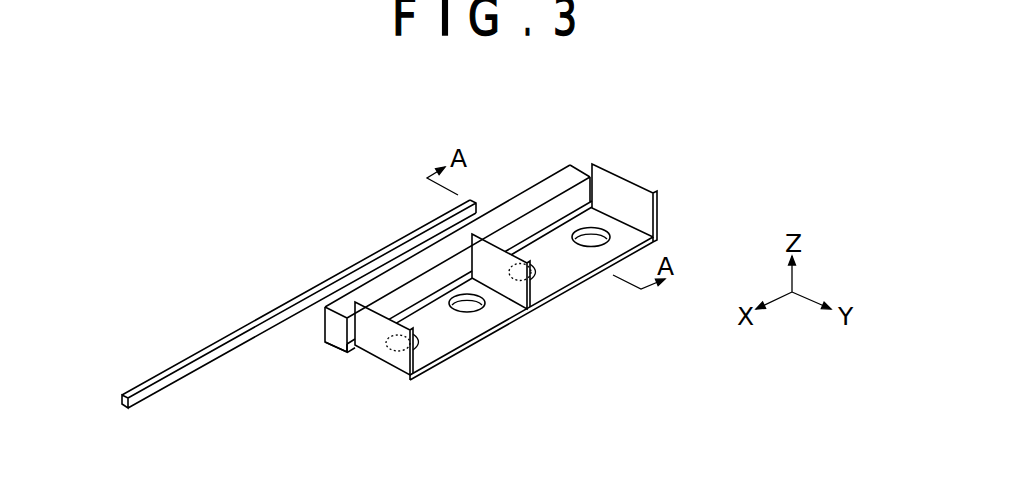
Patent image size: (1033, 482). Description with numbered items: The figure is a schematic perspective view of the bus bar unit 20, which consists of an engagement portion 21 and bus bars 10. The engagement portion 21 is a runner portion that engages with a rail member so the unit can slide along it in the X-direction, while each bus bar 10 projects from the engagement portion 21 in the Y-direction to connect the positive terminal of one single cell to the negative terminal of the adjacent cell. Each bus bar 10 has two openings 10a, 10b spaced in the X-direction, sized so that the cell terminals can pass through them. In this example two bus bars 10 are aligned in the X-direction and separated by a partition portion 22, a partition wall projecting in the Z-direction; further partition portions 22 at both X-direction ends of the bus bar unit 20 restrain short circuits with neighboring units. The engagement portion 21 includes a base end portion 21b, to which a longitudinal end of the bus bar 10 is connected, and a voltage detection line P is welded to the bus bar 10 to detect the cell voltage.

The bus bar 10 is at (563, 325).
The opening 10a is at (645, 237).
The opening 10b is at (421, 346).
The bus bar unit 20 is at (435, 296).
The engagement portion 21 is at (338, 333).
The base end portion 21b is at (314, 378).
The partition portion 22 is at (613, 173).
The voltage detection line P is at (382, 251).